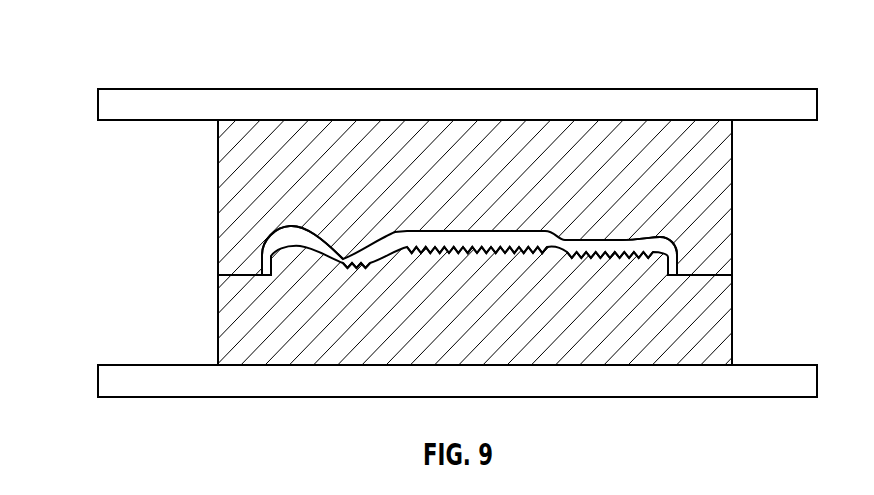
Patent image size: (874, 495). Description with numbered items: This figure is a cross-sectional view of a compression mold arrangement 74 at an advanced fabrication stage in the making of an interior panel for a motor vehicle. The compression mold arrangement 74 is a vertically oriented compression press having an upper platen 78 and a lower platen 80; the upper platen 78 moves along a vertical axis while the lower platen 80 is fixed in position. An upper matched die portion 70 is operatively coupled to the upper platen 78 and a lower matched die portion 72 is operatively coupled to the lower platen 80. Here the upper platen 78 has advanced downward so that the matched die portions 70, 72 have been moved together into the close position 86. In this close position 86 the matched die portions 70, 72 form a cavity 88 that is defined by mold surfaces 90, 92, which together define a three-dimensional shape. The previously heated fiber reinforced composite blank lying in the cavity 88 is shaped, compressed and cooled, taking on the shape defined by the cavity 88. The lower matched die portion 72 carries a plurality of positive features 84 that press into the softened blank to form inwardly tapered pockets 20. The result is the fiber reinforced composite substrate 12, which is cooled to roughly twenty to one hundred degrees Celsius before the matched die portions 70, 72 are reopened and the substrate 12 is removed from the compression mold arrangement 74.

The fiber reinforced composite substrate 12 is at (261, 262).
The inwardly tapered pockets 20 is at (337, 247).
The matched die portion 70 is at (727, 162).
The matched die portion 72 is at (727, 330).
The compression mold arrangement 74 is at (672, 60).
The upper platen 78 is at (770, 89).
The lower platen 80 is at (768, 397).
The positive features 84 is at (357, 264).
The close position 86 is at (750, 270).
The cavity 88 is at (680, 252).
The mold surface 90 is at (433, 231).
The mold surface 92 is at (437, 253).